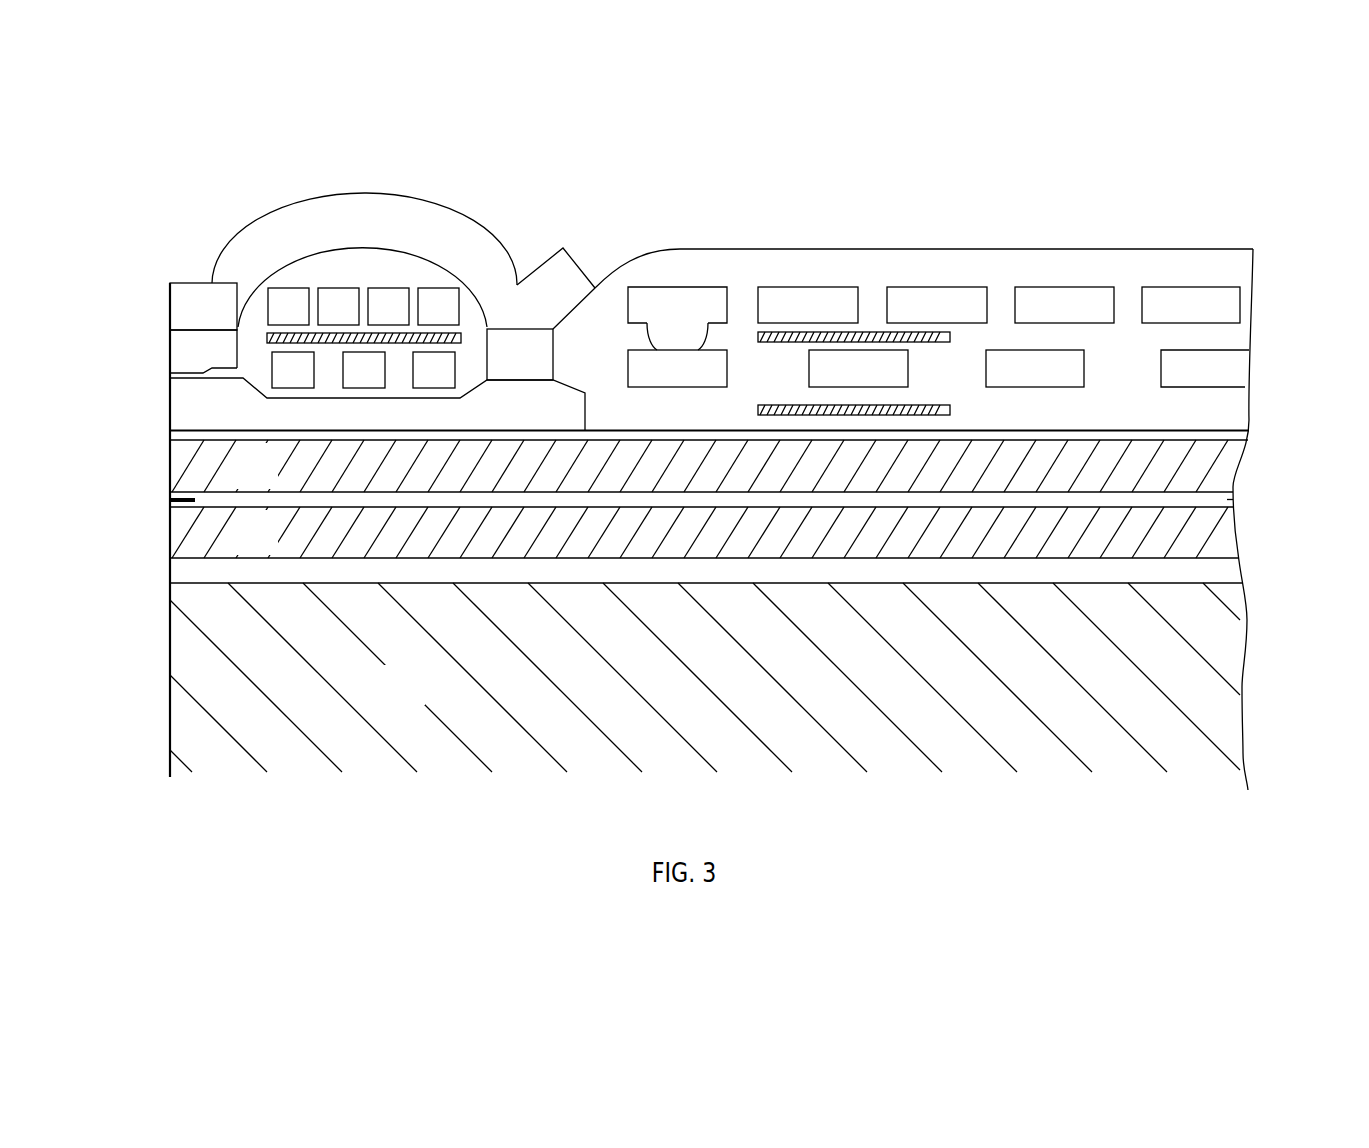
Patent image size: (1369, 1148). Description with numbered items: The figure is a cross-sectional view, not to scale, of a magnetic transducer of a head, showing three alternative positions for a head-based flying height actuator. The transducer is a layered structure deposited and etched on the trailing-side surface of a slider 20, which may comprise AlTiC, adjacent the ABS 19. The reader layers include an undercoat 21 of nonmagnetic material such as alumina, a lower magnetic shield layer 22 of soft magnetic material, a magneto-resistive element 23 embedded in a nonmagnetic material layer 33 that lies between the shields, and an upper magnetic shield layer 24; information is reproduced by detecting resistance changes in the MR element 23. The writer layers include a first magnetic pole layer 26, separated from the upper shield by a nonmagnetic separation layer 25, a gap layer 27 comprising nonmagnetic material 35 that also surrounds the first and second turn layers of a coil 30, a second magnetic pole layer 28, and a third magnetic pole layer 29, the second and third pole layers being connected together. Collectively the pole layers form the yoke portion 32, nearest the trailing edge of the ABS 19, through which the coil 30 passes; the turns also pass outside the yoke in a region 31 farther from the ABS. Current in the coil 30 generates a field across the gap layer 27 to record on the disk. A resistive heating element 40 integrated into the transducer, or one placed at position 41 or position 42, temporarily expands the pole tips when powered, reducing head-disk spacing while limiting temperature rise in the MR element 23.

The ABS 19 is at (170, 764).
The slider 20 is at (421, 701).
The undercoat 21 is at (180, 572).
The lower (S1) magnetic shield layer 22 is at (170, 532).
The magneto-resistive (MR) element 23 is at (170, 499).
The upper (S2) magnetic shield layer 24 is at (170, 467).
The separation layer 25 is at (170, 434).
The first magnetic pole layer 26 is at (170, 404).
The gap layer 27 is at (170, 375).
The second magnetic pole layer 28 is at (170, 350).
The third magnetic pole layer 29 is at (170, 307).
The coil 30 is at (1218, 306).
The region 31 is at (1250, 175).
The yoke portion 32 is at (478, 175).
The nonmagnetic material layer 33 is at (1227, 497).
The nonmagnetic material 35 is at (344, 277).
The resistive heating element 40 is at (266, 338).
The position for resistive heating element 41 is at (758, 335).
The position for resistive heating element 42 is at (950, 410).